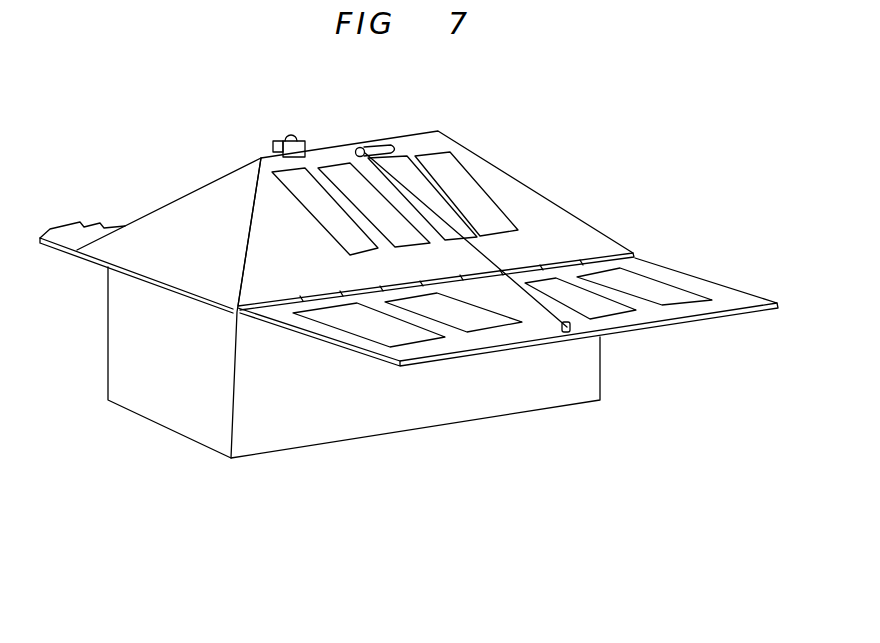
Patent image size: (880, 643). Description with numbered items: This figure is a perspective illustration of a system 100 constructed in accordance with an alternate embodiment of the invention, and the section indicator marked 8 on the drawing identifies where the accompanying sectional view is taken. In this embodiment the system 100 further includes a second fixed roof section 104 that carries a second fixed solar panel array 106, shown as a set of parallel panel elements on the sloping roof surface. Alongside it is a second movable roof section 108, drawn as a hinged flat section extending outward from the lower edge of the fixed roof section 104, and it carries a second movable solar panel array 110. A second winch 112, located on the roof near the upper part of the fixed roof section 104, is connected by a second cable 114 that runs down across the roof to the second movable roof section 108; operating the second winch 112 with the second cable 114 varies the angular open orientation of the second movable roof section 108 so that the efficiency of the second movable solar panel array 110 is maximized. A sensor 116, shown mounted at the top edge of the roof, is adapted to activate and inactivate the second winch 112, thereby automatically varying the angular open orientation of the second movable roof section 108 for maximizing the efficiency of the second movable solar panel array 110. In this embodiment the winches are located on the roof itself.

The system 100 is at (627, 140).
The second fixed roof section 104 is at (558, 220).
The second fixed solar panel array 106 is at (427, 186).
The second movable roof section 108 is at (693, 277).
The second movable solar panel array 110 is at (618, 307).
The second winch 112 is at (378, 142).
The second cable 114 is at (493, 262).
The sensor 116 is at (287, 134).
The section line 8- 8 is at (90, 291).